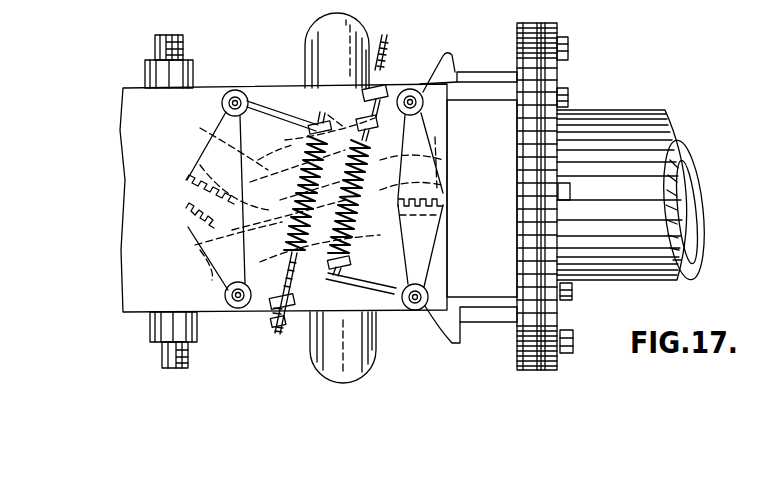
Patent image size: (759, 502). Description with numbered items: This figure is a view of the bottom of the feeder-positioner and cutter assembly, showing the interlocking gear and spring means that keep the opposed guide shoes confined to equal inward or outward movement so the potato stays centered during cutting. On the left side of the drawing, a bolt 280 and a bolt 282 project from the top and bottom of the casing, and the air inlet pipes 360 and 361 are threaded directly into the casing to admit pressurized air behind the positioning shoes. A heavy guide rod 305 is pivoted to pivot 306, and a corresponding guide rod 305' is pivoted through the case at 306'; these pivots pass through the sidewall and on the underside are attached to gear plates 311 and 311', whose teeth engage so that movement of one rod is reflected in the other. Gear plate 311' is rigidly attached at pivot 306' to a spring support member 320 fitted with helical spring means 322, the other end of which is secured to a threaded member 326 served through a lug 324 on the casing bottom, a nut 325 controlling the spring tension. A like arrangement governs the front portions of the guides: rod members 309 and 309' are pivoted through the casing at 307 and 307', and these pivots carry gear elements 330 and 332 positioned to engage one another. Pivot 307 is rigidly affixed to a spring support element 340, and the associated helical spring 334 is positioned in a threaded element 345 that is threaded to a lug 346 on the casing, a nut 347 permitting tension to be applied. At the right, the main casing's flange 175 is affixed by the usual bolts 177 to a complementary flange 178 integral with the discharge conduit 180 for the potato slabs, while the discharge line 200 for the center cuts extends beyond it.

The flange 175 is at (517, 34).
The bolts 177 is at (569, 48).
The complementary flange 178 is at (550, 84).
The discharge conduit 180 is at (610, 115).
The discharge line for the center cuts 200 is at (687, 143).
The upper bolt 280 is at (183, 44).
The lower bolt 282 is at (150, 328).
The guide rod 305 is at (315, 293).
The guide rod 305' is at (334, 113).
The pivot 306 is at (217, 295).
The pivot 306' is at (244, 84).
The pivot 307 is at (422, 325).
The pivot 307' is at (447, 96).
The rod member 309 is at (445, 249).
The rod member 309' is at (271, 147).
The gear plate 311 is at (190, 246).
The gear plate 311' is at (190, 158).
The spring support member 320 is at (266, 114).
The helical spring means 322 is at (290, 212).
The lug 324 is at (261, 314).
The nut 325 is at (267, 317).
The threaded member 326 is at (276, 329).
The gear element 330 is at (430, 173).
The gear element 332 is at (428, 232).
The coil spring 334 is at (350, 222).
The spring support element 340 is at (389, 300).
The threaded element 345 is at (379, 68).
The lug 346 is at (341, 48).
The nut 347 is at (381, 86).
The air inlet pipe 360 is at (372, 365).
The air inlet pipe 361 is at (352, 24).